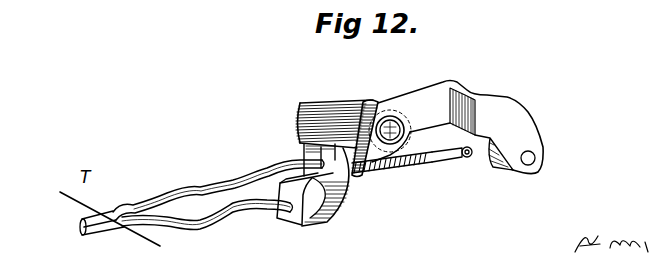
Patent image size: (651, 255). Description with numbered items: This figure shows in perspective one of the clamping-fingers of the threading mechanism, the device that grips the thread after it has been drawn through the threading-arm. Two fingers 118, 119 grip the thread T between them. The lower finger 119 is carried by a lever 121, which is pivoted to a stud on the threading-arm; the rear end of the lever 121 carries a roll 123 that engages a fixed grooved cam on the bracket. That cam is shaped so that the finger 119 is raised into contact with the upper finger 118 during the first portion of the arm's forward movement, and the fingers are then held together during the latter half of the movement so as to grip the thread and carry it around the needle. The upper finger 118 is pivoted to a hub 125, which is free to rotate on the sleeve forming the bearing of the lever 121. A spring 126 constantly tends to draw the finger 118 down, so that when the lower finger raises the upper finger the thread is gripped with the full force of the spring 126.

The upper finger 118 is at (218, 187).
The lower finger 119 is at (207, 222).
The lever 121 is at (493, 104).
The roll 123 is at (503, 169).
The hub 125 is at (342, 102).
The spring 126 is at (429, 166).